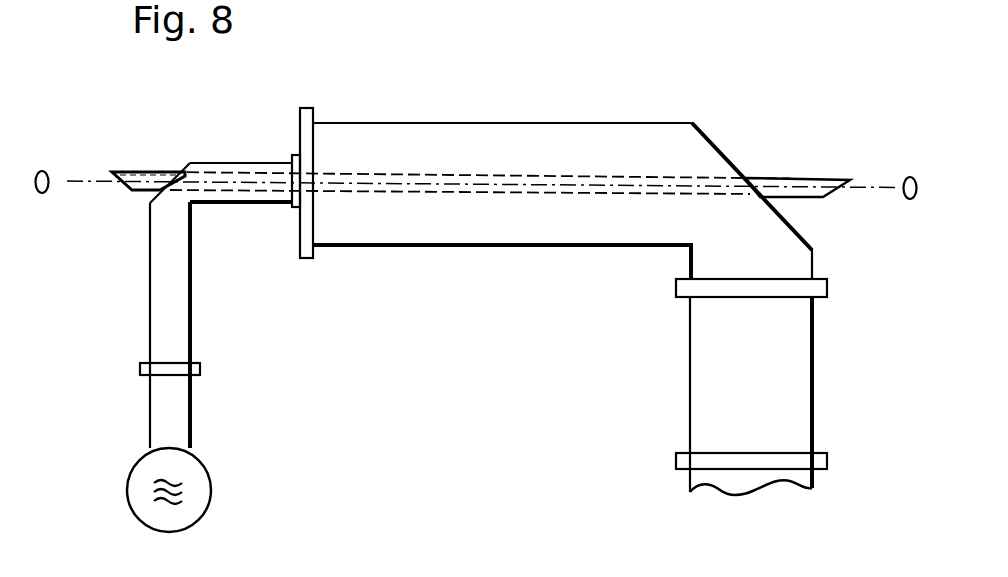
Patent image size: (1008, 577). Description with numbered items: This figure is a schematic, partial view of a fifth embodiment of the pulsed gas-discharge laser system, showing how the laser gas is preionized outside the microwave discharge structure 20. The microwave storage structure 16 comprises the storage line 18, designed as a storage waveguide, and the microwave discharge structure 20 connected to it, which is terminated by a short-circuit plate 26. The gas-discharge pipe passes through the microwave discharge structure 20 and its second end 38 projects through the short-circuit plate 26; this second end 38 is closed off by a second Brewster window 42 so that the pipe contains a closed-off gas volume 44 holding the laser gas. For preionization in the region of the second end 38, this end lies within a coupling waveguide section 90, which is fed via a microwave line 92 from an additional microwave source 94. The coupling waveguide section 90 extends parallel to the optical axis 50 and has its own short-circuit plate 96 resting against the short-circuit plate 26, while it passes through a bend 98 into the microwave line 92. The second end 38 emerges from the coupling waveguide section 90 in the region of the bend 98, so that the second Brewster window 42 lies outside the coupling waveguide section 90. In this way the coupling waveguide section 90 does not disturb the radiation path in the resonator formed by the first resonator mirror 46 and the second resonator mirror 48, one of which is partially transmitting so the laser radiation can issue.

The microwave storage structure 16 is at (638, 320).
The storage line 18 is at (717, 377).
The microwave discharge structure 20 is at (583, 138).
The short-circuit plate 26 is at (305, 258).
The second end 38 is at (210, 178).
The second Brewster window 42 is at (128, 188).
The gas volume 44 is at (130, 175).
The first resonator mirror 46 is at (908, 200).
The second resonator mirror 48 is at (42, 194).
The optical axis 50 is at (88, 180).
The coupling waveguide section 90 is at (263, 167).
The microwave line 92 is at (162, 317).
The additional microwave source 94 is at (202, 477).
The short-circuit plate 96 is at (292, 206).
The bend 98 is at (186, 166).